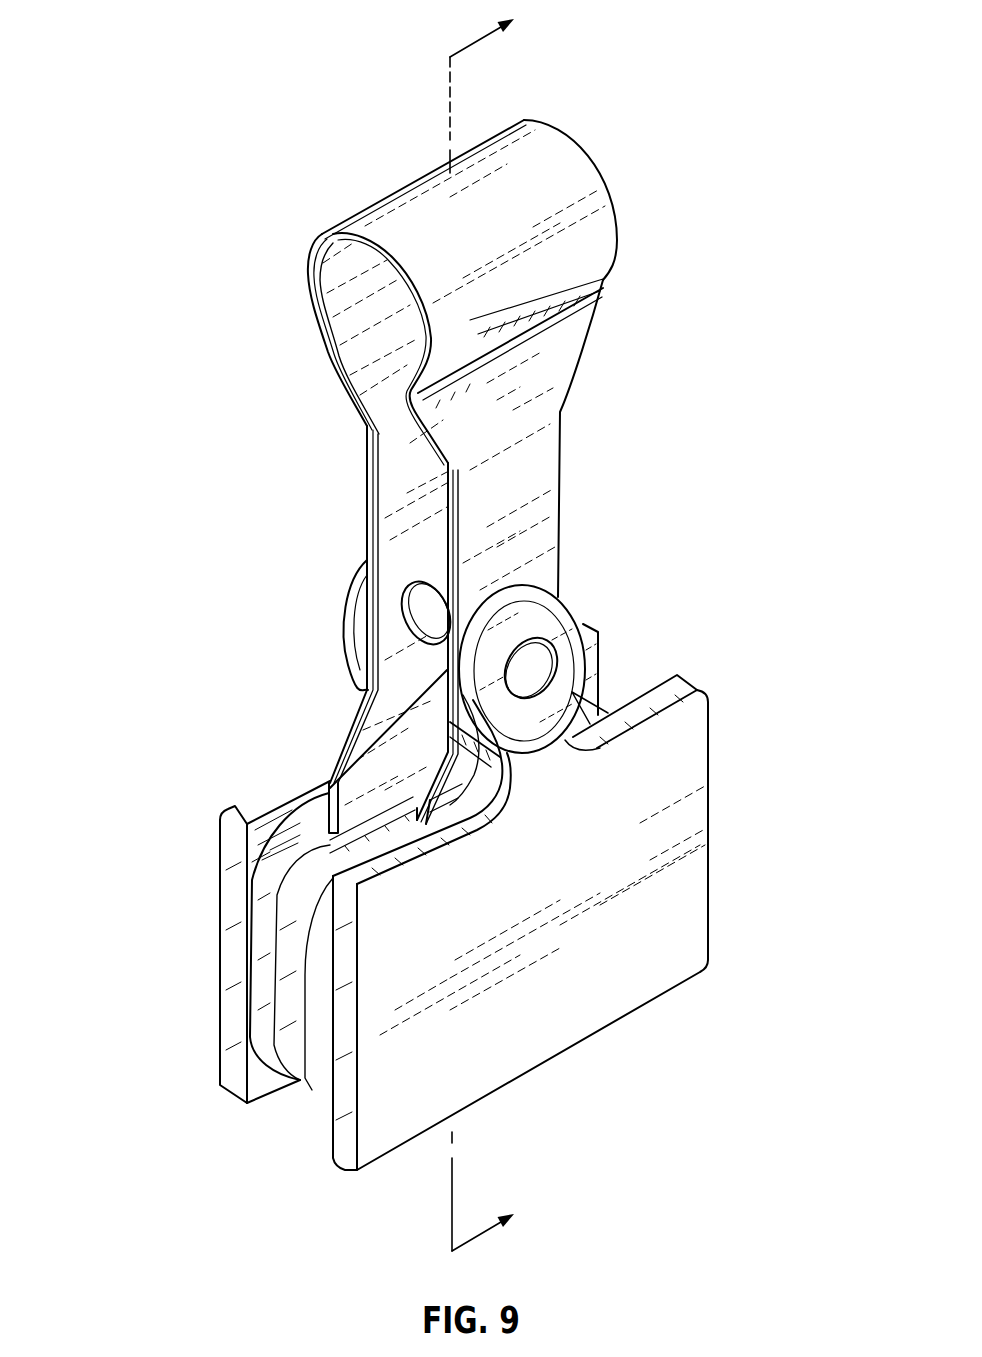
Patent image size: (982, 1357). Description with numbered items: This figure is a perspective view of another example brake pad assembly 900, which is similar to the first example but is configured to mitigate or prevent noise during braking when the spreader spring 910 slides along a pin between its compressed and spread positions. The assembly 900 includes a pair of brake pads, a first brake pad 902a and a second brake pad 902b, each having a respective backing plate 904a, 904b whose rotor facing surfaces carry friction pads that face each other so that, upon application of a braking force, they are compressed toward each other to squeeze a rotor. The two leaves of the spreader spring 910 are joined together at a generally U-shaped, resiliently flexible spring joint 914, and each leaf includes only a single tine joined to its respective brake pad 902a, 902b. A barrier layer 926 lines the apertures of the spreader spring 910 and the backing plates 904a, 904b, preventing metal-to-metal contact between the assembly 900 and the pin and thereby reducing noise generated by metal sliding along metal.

The brake pad assembly 900 is at (93, 346).
The spring joint 914 is at (564, 182).
The spreader spring 910 is at (540, 408).
The barrier layer 926 is at (538, 743).
The first backing plate 904a is at (632, 937).
The second backing plate 904b is at (255, 843).
The first brake pad 902a is at (510, 1075).
The second brake pad 902b is at (223, 923).